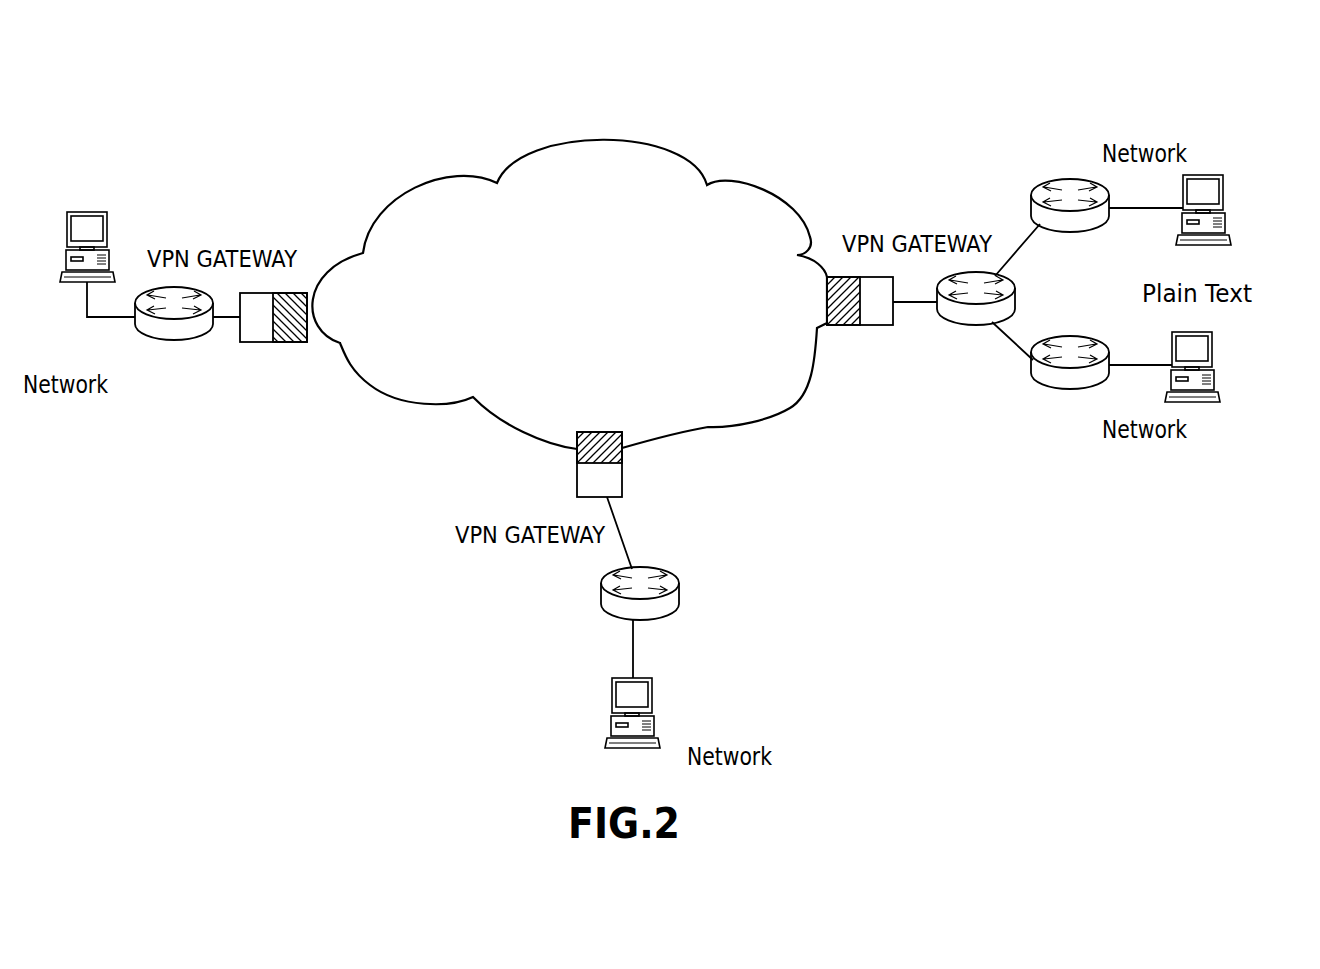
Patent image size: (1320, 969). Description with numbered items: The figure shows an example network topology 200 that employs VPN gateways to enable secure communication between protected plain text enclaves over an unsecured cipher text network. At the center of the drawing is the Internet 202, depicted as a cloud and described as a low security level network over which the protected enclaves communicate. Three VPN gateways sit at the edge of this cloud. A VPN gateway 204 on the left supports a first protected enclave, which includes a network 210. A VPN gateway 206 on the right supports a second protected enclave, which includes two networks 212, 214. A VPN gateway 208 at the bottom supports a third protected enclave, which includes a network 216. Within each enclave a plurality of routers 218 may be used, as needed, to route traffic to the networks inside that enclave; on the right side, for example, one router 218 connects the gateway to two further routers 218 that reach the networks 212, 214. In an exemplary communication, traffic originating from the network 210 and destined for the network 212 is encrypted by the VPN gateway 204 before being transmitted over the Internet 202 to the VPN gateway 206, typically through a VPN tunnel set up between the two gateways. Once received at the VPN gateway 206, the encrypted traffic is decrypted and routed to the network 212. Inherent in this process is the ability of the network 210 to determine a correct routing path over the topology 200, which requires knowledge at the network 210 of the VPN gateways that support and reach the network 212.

The network topology 200 is at (708, 85).
The Internet 202 is at (583, 140).
The VPN gateway 204 is at (263, 343).
The VPN gateway 206 is at (855, 325).
The VPN gateway 208 is at (623, 482).
The network 210 is at (97, 223).
The network 212 is at (1237, 200).
The network 214 is at (1227, 357).
The network 216 is at (654, 692).
The routers 218 is at (185, 342).